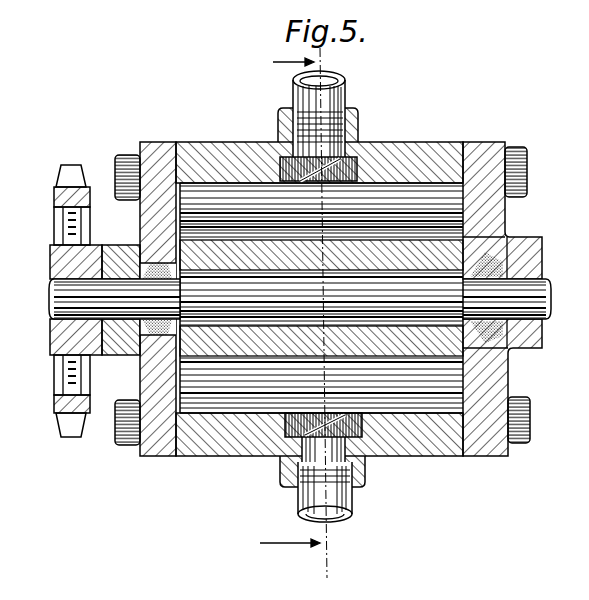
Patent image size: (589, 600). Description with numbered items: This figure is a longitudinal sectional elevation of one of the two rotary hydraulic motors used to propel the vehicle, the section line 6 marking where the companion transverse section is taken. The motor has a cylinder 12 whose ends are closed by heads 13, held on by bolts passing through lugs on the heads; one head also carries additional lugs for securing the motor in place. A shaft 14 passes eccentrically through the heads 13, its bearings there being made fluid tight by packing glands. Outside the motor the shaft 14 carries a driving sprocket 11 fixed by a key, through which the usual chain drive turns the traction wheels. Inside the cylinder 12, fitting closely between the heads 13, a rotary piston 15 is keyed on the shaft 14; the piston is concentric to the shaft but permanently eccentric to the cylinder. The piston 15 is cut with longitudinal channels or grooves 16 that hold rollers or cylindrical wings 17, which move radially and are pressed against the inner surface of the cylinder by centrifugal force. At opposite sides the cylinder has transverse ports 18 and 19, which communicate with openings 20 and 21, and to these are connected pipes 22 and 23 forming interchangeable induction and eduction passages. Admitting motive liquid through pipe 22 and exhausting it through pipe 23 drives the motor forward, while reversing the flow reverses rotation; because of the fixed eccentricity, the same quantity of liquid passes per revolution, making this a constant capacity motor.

The section line 6— 6 is at (303, 313).
The driving sprocket 11 is at (62, 204).
The cylinder 12 is at (393, 146).
The heads 13 is at (147, 233).
The shaft 14 is at (52, 305).
The rotary piston 15 is at (520, 248).
The longitudinal channels or grooves 16 is at (470, 243).
The rollers or cylindrical wings 17 is at (428, 198).
The port 18 is at (310, 428).
The port 19 is at (278, 167).
The opening 20 is at (304, 458).
The opening 21 is at (295, 141).
The pipe 22 is at (298, 502).
The pipe 23 is at (294, 93).